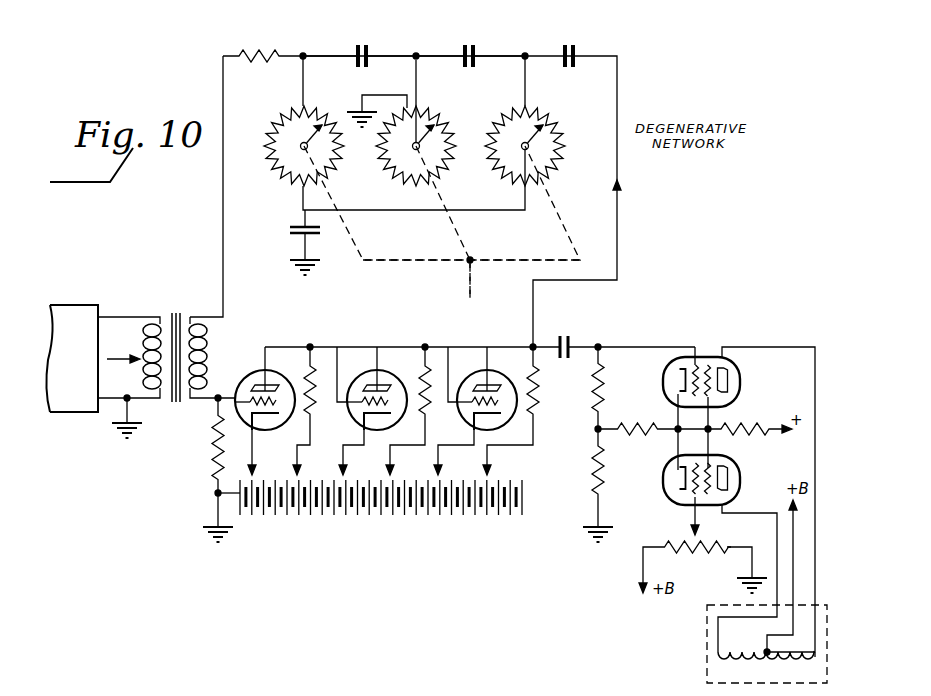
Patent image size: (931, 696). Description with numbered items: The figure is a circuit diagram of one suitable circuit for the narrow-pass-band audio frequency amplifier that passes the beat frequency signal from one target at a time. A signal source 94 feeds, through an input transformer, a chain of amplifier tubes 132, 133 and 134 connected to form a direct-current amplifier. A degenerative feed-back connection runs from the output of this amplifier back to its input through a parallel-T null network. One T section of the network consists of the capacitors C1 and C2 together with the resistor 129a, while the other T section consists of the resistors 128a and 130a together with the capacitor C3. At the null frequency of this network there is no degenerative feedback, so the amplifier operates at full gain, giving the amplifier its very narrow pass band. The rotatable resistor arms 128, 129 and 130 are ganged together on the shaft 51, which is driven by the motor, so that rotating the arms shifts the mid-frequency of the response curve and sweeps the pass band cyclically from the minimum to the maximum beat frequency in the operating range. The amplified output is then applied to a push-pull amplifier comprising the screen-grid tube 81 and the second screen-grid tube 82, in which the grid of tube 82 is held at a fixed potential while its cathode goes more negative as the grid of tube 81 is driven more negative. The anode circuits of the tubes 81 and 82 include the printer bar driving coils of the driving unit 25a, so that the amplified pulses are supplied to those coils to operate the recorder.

The rotatable arm 128 is at (280, 127).
The resistor 128a is at (274, 165).
The rotatable arm 129 is at (443, 140).
The resistor 129a is at (386, 165).
The rotatable arm 130 is at (553, 135).
The resistor 130a is at (561, 145).
The capacitor C1 is at (353, 62).
The capacitor C2 is at (462, 62).
The capacitor C3 is at (289, 233).
The shaft 51 is at (466, 284).
The signal source 94 is at (80, 310).
The amplifier tube 132 is at (257, 370).
The amplifier tube 133 is at (369, 370).
The amplifier tube 134 is at (480, 370).
The screen-grid tube 81 is at (663, 383).
The second screen-grid tube 82 is at (663, 481).
The driving unit 25a is at (706, 665).